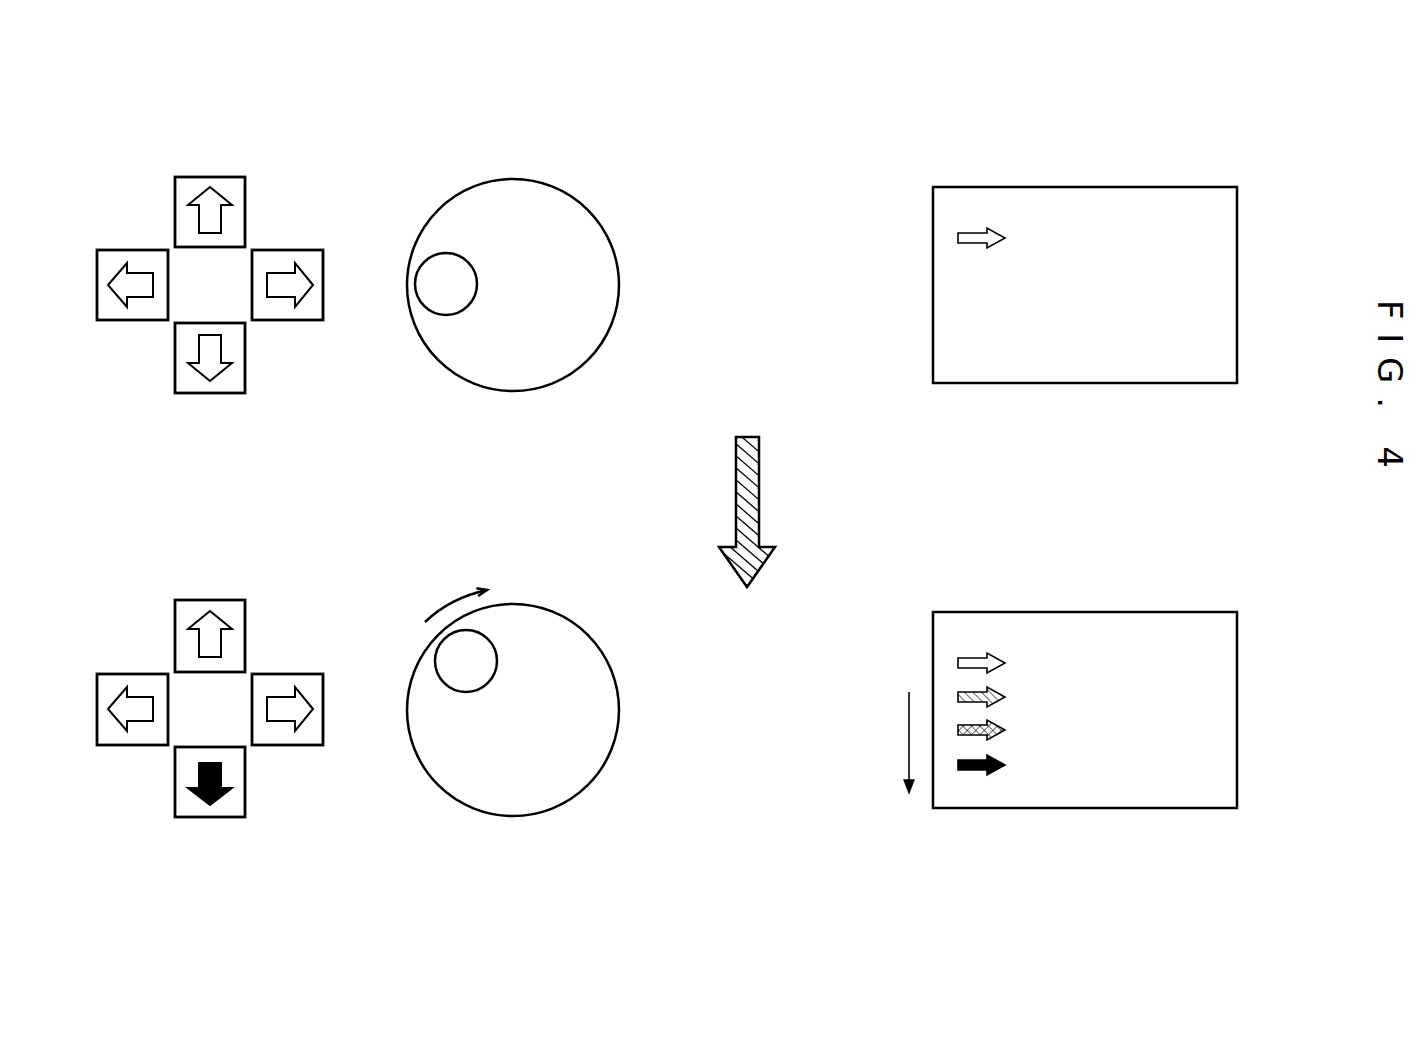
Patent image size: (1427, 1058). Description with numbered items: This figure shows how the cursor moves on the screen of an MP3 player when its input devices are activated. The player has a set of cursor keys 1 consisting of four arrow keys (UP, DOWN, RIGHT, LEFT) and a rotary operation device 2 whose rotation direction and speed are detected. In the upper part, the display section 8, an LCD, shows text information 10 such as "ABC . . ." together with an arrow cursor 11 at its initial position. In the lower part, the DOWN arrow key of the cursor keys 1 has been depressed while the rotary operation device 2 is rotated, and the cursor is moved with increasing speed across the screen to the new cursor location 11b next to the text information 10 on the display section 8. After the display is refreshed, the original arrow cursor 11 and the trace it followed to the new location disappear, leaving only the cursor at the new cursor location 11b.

The set of cursor keys 1 is at (290, 181).
The rotary operation device 2 is at (554, 187).
The display section 8 is at (1041, 187).
The text information 10 is at (1177, 210).
The arrow cursor 11 is at (967, 228).
The new cursor location 11b is at (967, 773).